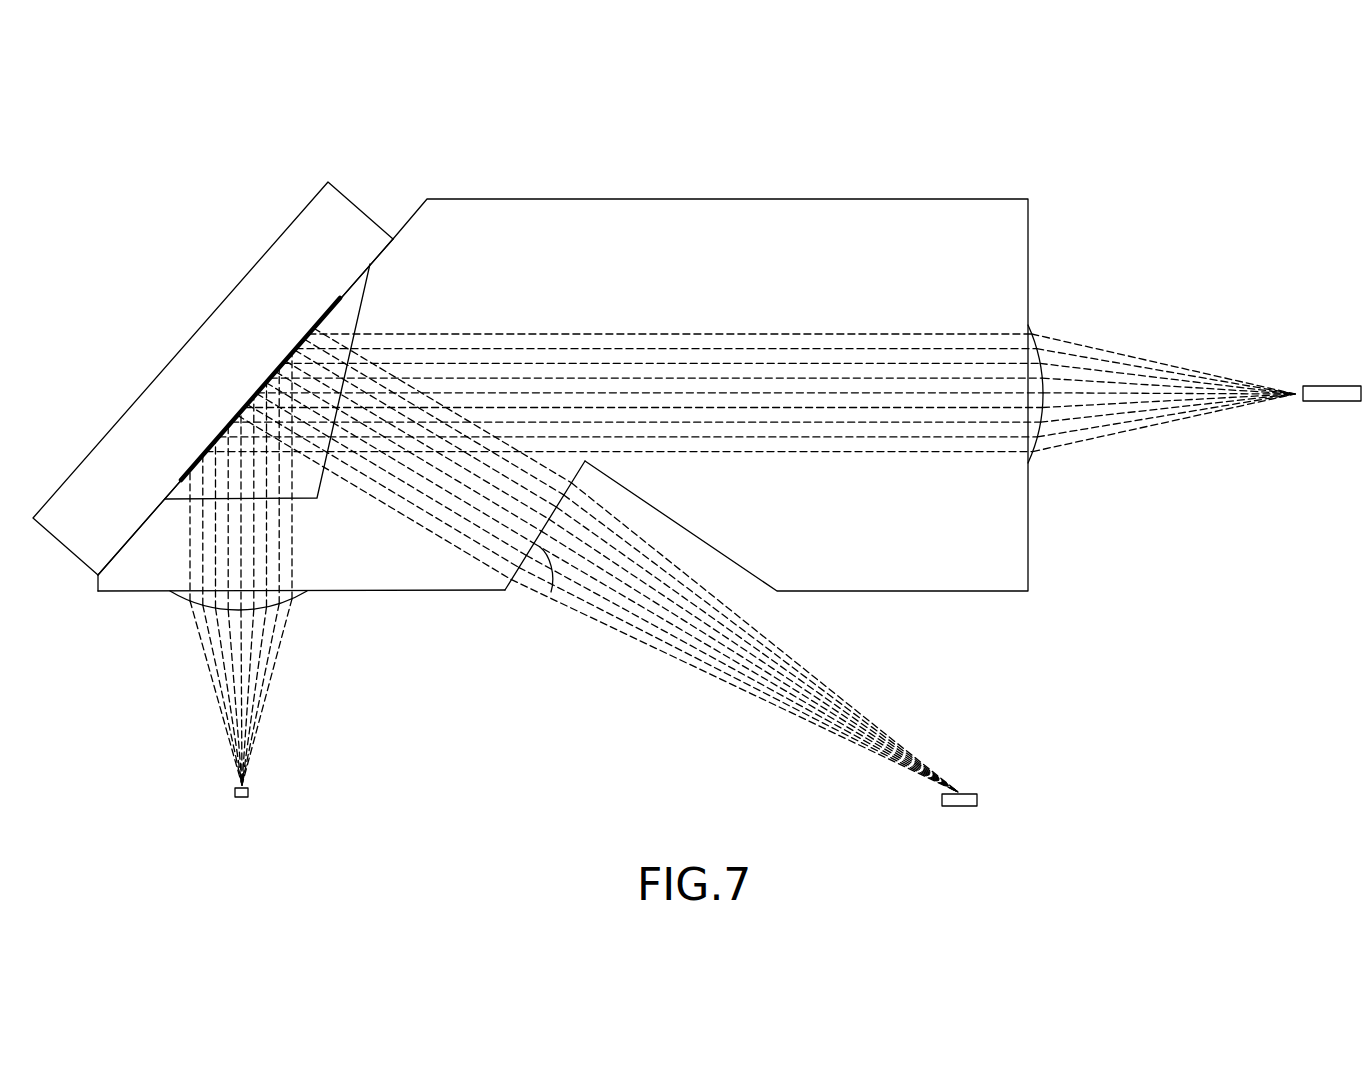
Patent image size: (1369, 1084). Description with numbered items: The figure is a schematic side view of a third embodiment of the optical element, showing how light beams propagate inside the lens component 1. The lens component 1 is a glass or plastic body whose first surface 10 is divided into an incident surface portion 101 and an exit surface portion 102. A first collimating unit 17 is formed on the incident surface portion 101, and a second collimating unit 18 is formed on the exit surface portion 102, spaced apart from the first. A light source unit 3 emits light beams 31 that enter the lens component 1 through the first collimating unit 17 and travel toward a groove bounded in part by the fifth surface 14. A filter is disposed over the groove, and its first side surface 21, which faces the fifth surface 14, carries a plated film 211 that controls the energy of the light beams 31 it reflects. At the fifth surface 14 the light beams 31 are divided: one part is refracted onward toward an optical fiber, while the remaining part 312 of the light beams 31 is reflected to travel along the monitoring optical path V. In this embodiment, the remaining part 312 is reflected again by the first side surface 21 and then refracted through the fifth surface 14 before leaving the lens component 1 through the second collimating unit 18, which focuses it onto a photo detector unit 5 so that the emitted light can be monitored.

The lens component 1 is at (628, 186).
The first surface 10 is at (124, 604).
The incident surface portion 101 is at (407, 593).
The exit surface portion 102 is at (512, 592).
The fifth surface 14 is at (356, 333).
The first collimating unit 17 is at (300, 600).
The second collimating unit 18 is at (551, 593).
The first side surface 21 is at (172, 491).
The plated film 211 is at (246, 408).
The remaining part of the light beams 312 is at (320, 316).
The light source unit 3 is at (243, 799).
The light beams 31 is at (212, 675).
The photo detector unit 5 is at (962, 807).
The monitoring optical path V is at (343, 298).